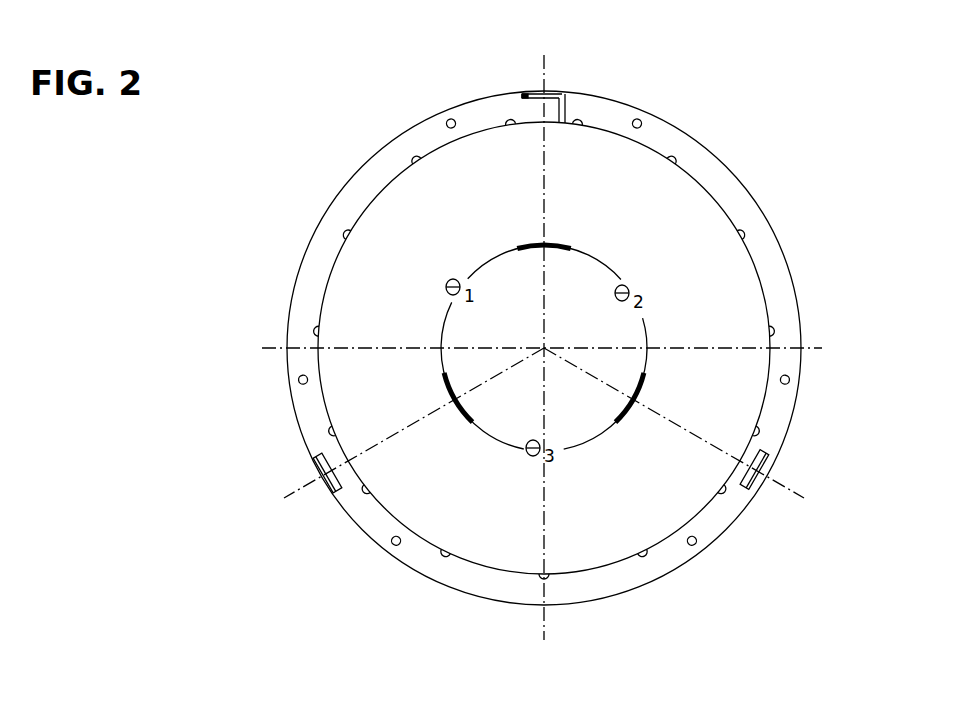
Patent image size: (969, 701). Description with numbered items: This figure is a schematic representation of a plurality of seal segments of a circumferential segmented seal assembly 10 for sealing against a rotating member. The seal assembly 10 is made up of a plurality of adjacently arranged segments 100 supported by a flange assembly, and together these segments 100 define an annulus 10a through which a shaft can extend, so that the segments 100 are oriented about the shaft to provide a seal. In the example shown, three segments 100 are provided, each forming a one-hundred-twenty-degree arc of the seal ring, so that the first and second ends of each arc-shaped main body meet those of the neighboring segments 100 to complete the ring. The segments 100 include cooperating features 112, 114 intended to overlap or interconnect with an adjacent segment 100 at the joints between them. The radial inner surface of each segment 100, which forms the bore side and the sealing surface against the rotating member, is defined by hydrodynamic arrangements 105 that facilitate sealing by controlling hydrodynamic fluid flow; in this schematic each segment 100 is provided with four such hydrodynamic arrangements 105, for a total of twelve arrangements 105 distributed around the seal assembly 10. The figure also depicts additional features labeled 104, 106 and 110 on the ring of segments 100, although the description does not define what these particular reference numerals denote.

The seal assembly 10 is at (712, 79).
The annulus 10a is at (700, 318).
The segment 100 is at (345, 183).
The holes 104 is at (352, 232).
The hydrodynamic arrangement 105 is at (480, 151).
The inner edge 106 is at (327, 280).
The thickened segments 110 is at (403, 527).
The cooperating feature 112 is at (317, 462).
The cooperating feature 114 is at (320, 472).